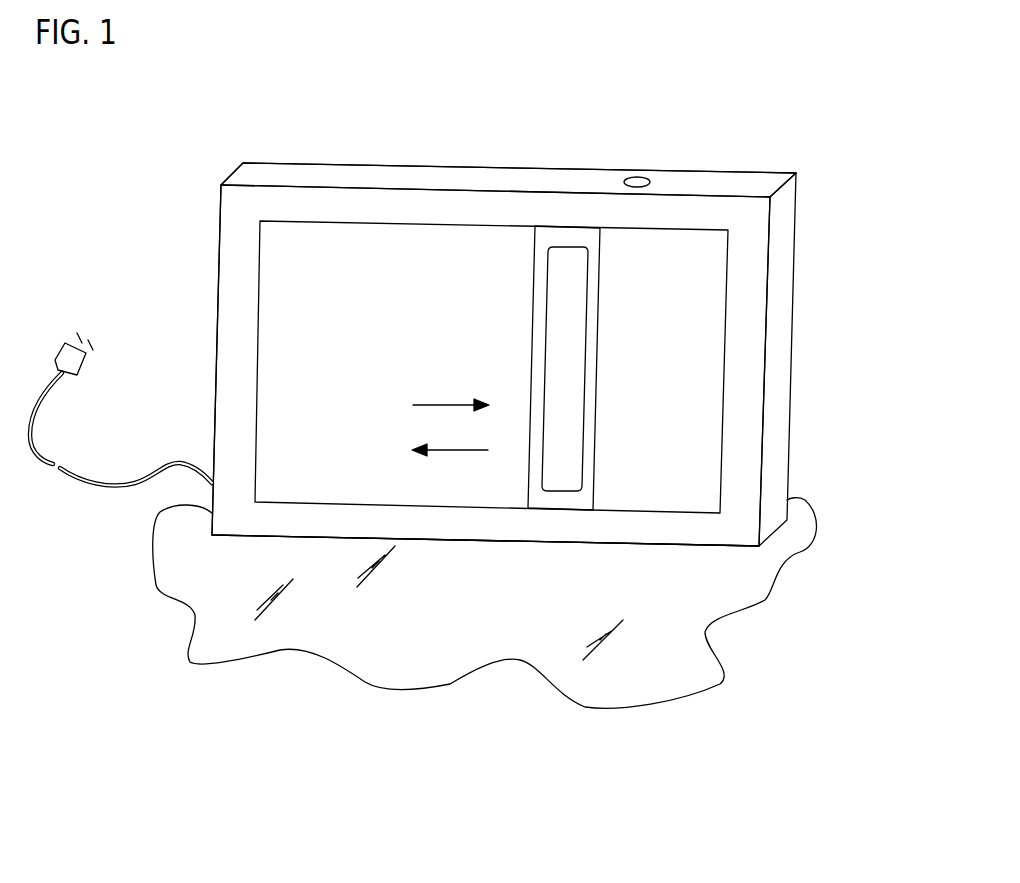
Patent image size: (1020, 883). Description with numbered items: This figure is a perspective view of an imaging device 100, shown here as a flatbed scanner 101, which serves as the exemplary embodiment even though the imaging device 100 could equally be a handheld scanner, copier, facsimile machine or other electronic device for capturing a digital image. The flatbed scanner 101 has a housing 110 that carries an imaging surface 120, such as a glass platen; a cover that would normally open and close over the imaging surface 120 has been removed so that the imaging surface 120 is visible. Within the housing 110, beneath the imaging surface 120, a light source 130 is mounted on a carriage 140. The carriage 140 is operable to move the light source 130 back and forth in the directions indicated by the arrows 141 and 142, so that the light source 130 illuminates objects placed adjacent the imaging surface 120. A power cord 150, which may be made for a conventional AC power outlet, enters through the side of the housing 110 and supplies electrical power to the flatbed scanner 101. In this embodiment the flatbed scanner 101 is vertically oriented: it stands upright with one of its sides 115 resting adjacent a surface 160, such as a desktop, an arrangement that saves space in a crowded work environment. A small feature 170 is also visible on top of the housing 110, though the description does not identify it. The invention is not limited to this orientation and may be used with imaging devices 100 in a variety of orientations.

The imaging device 100 is at (362, 115).
The flatbed scanner 101 is at (505, 167).
The housing 110 is at (257, 170).
The side 115 is at (613, 547).
The imaging surface 120 is at (357, 293).
The light source 130 is at (588, 402).
The carriage 140 is at (600, 293).
The arrow 141 is at (448, 403).
The arrow 142 is at (450, 452).
The power cord 150 is at (113, 490).
The surface 160 is at (548, 685).
The indicator 170 is at (648, 184).